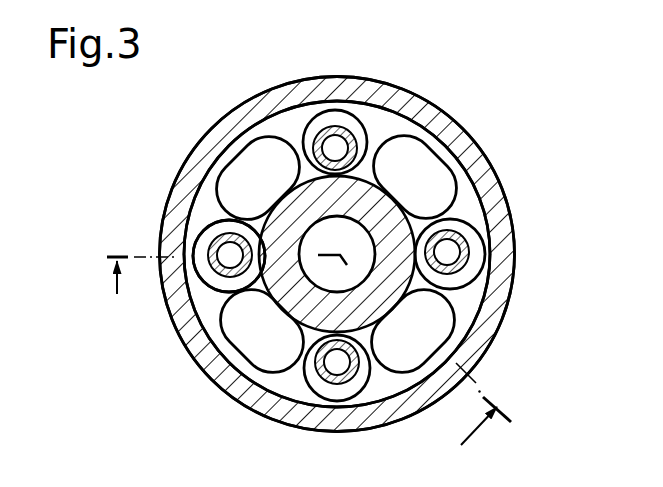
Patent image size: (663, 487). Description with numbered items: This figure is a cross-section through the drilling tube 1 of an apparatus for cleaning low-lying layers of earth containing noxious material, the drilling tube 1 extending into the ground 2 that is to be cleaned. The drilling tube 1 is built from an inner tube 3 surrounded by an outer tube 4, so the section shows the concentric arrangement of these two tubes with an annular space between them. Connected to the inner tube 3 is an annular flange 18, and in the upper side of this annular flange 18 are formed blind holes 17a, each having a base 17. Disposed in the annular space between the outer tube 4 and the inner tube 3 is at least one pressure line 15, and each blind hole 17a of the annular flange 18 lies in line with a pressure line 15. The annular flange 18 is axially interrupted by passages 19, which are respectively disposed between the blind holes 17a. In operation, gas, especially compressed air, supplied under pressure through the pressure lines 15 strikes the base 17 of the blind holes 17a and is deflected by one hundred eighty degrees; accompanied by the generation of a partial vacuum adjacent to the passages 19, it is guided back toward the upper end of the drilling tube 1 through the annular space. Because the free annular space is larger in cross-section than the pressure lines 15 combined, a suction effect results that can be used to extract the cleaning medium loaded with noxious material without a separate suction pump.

The drilling tube 1 is at (527, 211).
The ground 2 is at (294, 352).
The inner tube 3 is at (385, 283).
The outer tube 4 is at (462, 126).
The pressure line 15 is at (330, 364).
The base 17 is at (200, 276).
The blind hole 17a is at (207, 232).
The annular flange 18 is at (202, 316).
The passages 19 is at (248, 164).